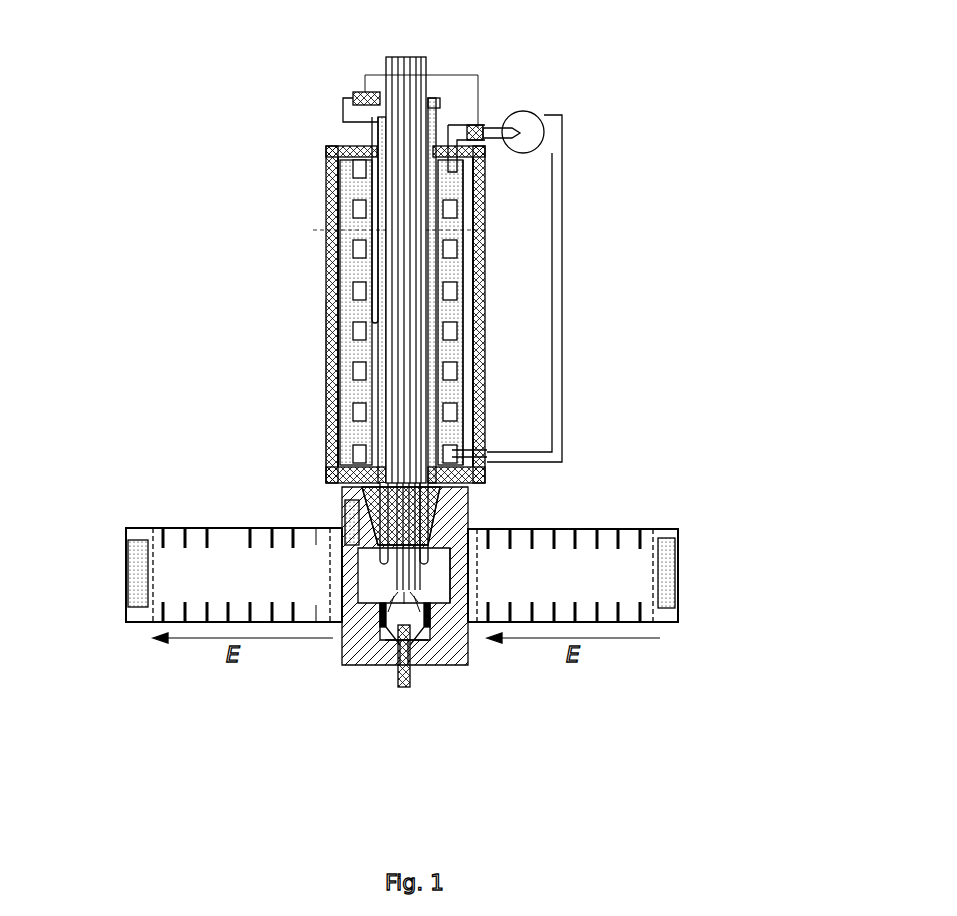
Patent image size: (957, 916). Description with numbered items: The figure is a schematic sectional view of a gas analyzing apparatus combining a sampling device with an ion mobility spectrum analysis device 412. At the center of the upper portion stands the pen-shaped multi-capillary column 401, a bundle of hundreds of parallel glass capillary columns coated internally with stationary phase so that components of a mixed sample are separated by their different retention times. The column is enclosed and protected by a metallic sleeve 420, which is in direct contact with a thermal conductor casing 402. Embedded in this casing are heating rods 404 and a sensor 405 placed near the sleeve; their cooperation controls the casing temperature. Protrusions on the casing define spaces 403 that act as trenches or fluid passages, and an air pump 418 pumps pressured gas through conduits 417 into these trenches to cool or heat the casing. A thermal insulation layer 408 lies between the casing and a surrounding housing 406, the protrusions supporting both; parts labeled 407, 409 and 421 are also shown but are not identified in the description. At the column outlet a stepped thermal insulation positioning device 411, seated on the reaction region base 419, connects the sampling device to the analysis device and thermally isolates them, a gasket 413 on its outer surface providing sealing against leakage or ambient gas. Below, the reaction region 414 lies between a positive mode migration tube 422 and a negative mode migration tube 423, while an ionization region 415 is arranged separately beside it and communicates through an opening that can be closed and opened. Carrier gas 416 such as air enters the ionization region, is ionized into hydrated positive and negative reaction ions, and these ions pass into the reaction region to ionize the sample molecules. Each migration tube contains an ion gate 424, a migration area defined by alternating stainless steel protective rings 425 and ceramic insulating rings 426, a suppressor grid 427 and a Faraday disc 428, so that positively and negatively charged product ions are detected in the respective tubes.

The multi-capillary column 401 is at (428, 64).
The thermal conductor casing 402 is at (368, 350).
The spaces 403 is at (453, 411).
The heater 404 is at (372, 290).
The sensor 405 is at (428, 302).
The housing 406 is at (330, 147).
The gas fitting 407 is at (352, 95).
The thermal insulation layer 408 is at (473, 349).
The coolant pipe 409 is at (478, 152).
The thermal insulation positioning device 411 is at (362, 490).
The ion mobility spectrum analysis device 412 is at (587, 512).
The gasket 413 is at (352, 540).
The reaction region 414 is at (342, 647).
The ionization region 415 is at (395, 645).
The carrier gas 416 is at (411, 676).
The conduits 417 is at (566, 296).
The air pump 418 is at (537, 140).
The reaction region base 419 is at (473, 525).
The metallic sleeve 420 is at (380, 422).
The outer wall 421 is at (333, 447).
The positive mode migration tube 422 is at (153, 620).
The negative mode migration tube 423 is at (573, 587).
The ion gate 424 is at (327, 577).
The stainless steel protective rings 425 is at (183, 528).
The ceramic insulating rings 426 is at (205, 528).
The suppressor grid 427 is at (657, 532).
The Faraday disc 428 is at (135, 532).